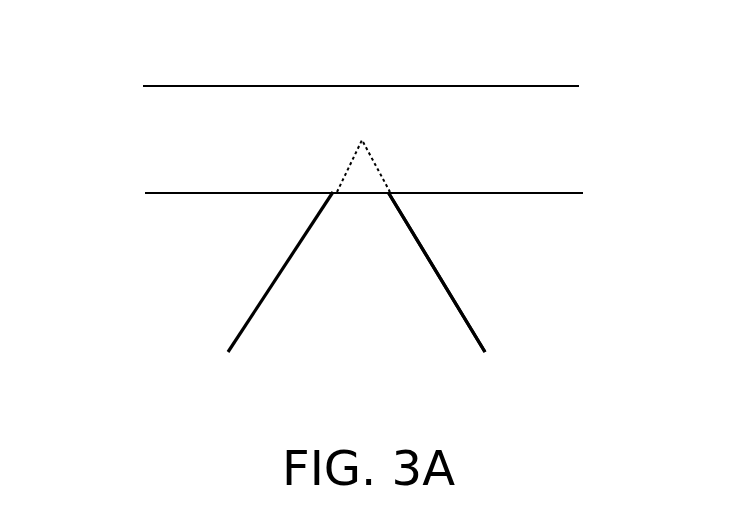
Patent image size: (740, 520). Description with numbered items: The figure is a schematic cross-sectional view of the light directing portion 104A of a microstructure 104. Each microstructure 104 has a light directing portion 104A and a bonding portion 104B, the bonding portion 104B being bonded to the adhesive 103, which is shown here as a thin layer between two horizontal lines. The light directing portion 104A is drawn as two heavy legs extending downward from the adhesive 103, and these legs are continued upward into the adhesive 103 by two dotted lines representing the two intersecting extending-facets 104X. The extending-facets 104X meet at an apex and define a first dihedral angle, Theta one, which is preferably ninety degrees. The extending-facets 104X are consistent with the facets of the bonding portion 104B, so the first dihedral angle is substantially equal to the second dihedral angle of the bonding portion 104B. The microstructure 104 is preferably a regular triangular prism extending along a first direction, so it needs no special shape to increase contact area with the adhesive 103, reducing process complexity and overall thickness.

The adhesive 103 is at (538, 149).
The microstructure 104 is at (347, 255).
The light directing portion 104A is at (433, 332).
The bonding portion 104B is at (352, 186).
The extending-facets 104X is at (340, 176).